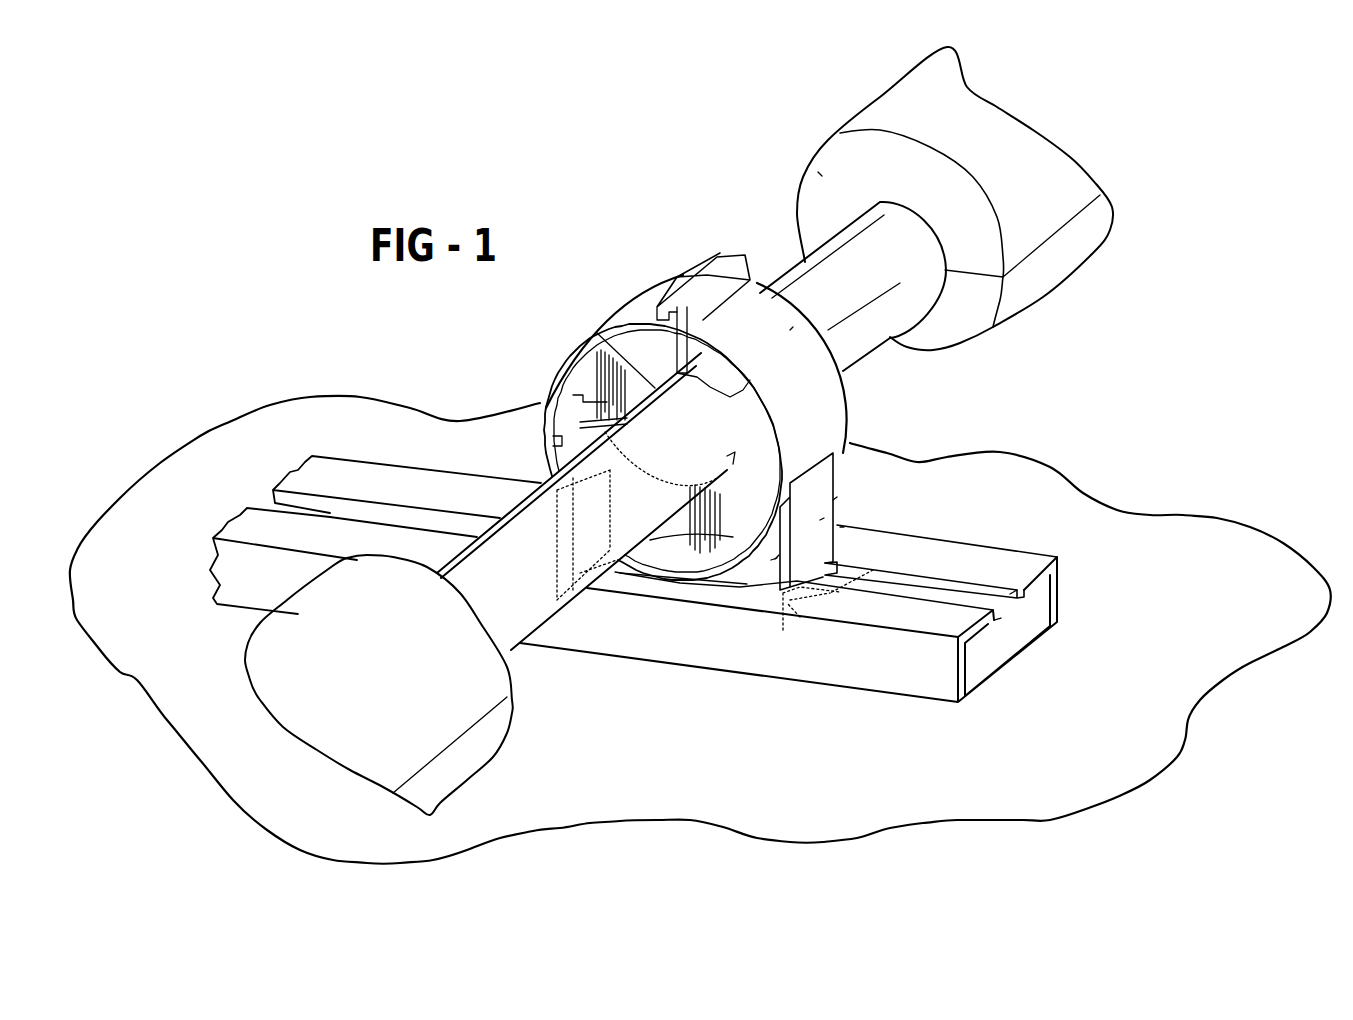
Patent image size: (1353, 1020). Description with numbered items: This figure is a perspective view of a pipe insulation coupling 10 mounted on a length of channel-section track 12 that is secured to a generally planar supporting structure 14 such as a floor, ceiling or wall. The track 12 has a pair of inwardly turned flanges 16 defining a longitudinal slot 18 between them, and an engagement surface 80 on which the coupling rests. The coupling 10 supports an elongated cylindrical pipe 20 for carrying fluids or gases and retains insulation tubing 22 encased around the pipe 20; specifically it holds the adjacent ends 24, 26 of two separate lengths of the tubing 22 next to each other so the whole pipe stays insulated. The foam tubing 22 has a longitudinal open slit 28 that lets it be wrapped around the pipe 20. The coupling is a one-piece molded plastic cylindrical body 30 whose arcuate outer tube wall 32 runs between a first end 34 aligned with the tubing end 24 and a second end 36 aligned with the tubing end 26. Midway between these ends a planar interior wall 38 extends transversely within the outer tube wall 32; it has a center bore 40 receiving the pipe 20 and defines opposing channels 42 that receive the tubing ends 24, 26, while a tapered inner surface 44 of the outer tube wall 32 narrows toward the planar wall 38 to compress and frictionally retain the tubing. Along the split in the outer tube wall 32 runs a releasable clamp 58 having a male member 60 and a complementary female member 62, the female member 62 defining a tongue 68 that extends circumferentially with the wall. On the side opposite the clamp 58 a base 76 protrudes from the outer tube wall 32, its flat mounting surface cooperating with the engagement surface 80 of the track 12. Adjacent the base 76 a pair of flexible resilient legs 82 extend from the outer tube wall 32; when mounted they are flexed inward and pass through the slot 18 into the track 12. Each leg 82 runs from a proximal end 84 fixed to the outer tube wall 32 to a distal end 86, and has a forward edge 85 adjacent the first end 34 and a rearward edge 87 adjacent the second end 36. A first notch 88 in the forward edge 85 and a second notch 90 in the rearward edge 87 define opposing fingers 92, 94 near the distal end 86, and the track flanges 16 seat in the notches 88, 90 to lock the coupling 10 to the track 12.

The pipe insulation coupling 10 is at (614, 249).
The channel-section track 12 is at (1020, 653).
The supporting structure 14 is at (1237, 530).
The flanges 16 is at (1057, 607).
The slot 18 is at (963, 590).
The pipe 20 is at (867, 357).
The insulation tubing 22 is at (913, 70).
The end of insulation tubing 24 is at (818, 172).
The end of insulation tubing 26 is at (425, 563).
The longitudinal open slit 28 is at (1073, 228).
The cylindrical body 30 is at (704, 437).
The outer tube wall 32 is at (790, 330).
The first end 34 is at (847, 407).
The second end 36 is at (547, 390).
The planar interior wall 38 is at (733, 537).
The center bore 40 is at (733, 460).
The channels 42 is at (553, 445).
The tapered inner surface 44 is at (576, 423).
The releasable clamp 58 is at (712, 279).
The male member 60 is at (733, 278).
The female member 62 is at (690, 290).
The tongue 68 is at (673, 321).
The base 76 is at (747, 585).
The engagement surface 80 is at (478, 507).
The legs 82 is at (820, 520).
The proximal end 84 is at (808, 487).
The forward edge 85 is at (837, 497).
The distal end 86 is at (783, 593).
The rearward edge 87 is at (775, 559).
The first notch 88 is at (840, 527).
The second notch 90 is at (771, 560).
The finger 92 is at (873, 570).
The finger 94 is at (800, 617).